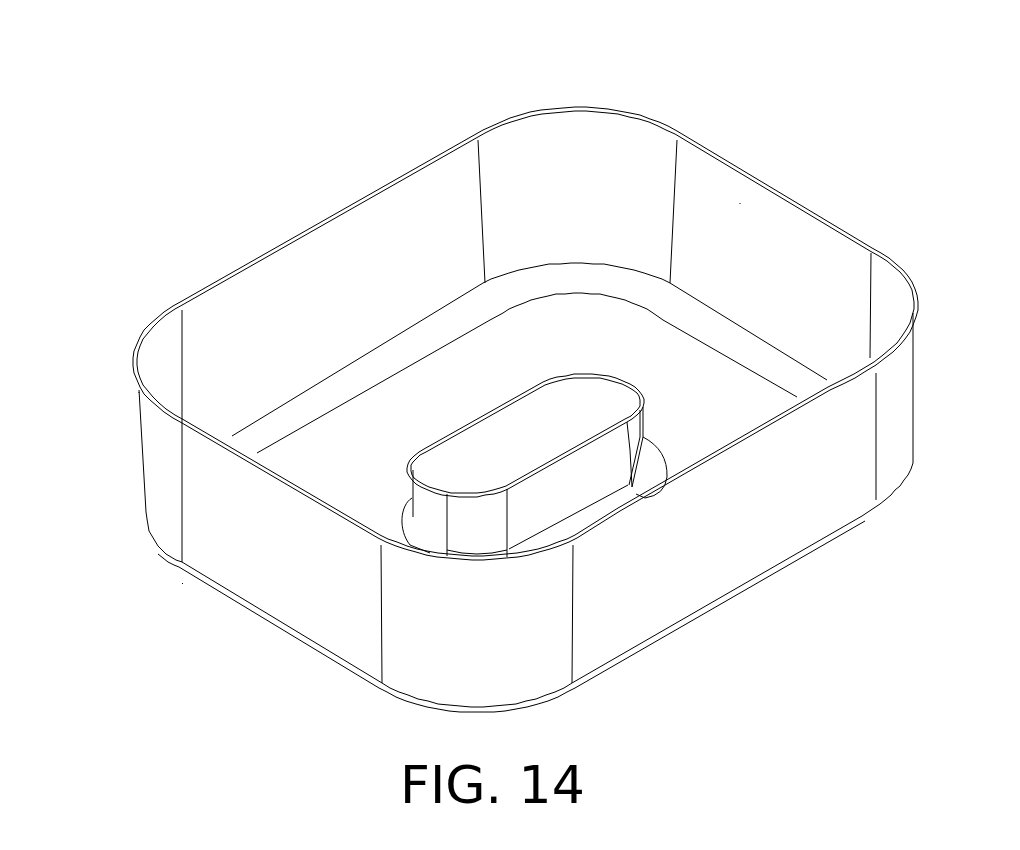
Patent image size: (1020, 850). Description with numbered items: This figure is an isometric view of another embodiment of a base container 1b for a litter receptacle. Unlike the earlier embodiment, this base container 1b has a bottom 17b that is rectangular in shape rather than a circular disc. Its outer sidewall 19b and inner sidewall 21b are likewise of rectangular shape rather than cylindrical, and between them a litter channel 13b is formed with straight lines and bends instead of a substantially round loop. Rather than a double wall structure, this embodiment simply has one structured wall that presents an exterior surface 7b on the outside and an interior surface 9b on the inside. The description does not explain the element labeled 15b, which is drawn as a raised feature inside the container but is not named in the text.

The base container 1b is at (182, 584).
The exterior surface 7b is at (717, 550).
The interior surface 9b is at (448, 178).
The litter channel 13b is at (380, 420).
The boss 15b is at (513, 455).
The bottom 17b is at (330, 465).
The outer sidewall 19b is at (740, 203).
The inner sidewall 21b is at (615, 460).